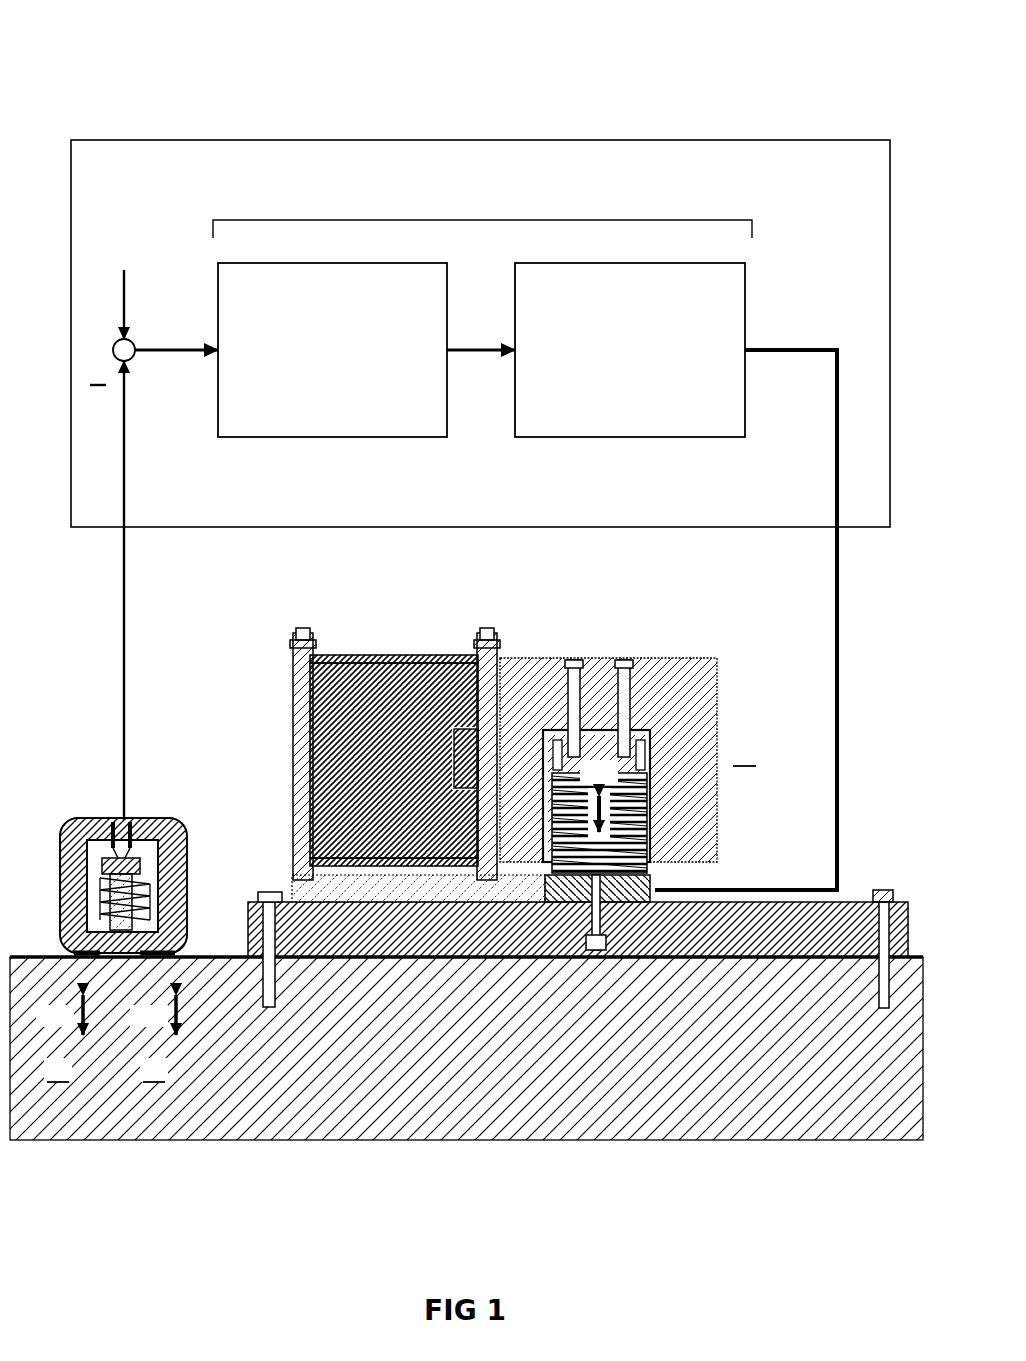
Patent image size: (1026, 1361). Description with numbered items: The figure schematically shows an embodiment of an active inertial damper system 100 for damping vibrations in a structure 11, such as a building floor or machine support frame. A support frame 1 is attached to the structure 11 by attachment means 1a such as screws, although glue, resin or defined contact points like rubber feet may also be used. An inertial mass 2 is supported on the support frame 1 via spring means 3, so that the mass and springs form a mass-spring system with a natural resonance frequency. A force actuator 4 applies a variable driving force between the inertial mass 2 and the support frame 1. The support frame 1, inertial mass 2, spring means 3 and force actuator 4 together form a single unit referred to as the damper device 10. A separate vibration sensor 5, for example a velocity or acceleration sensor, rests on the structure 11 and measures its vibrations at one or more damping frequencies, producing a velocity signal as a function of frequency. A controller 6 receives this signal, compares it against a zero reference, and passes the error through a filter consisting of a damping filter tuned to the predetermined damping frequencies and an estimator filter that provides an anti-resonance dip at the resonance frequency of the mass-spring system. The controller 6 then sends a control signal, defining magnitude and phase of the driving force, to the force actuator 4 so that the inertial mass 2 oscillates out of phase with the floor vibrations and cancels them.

The active inertial damper system 100 is at (100, 86).
The controller 6 is at (851, 189).
The damper device 10 is at (250, 681).
The support frame 1 is at (333, 928).
The attachment means 1a is at (886, 884).
The spring means 3 is at (400, 856).
The inertial mass 2 is at (690, 708).
The force actuator 4 is at (642, 808).
The vibration sensor 5 is at (58, 826).
The structure 11 is at (453, 1063).